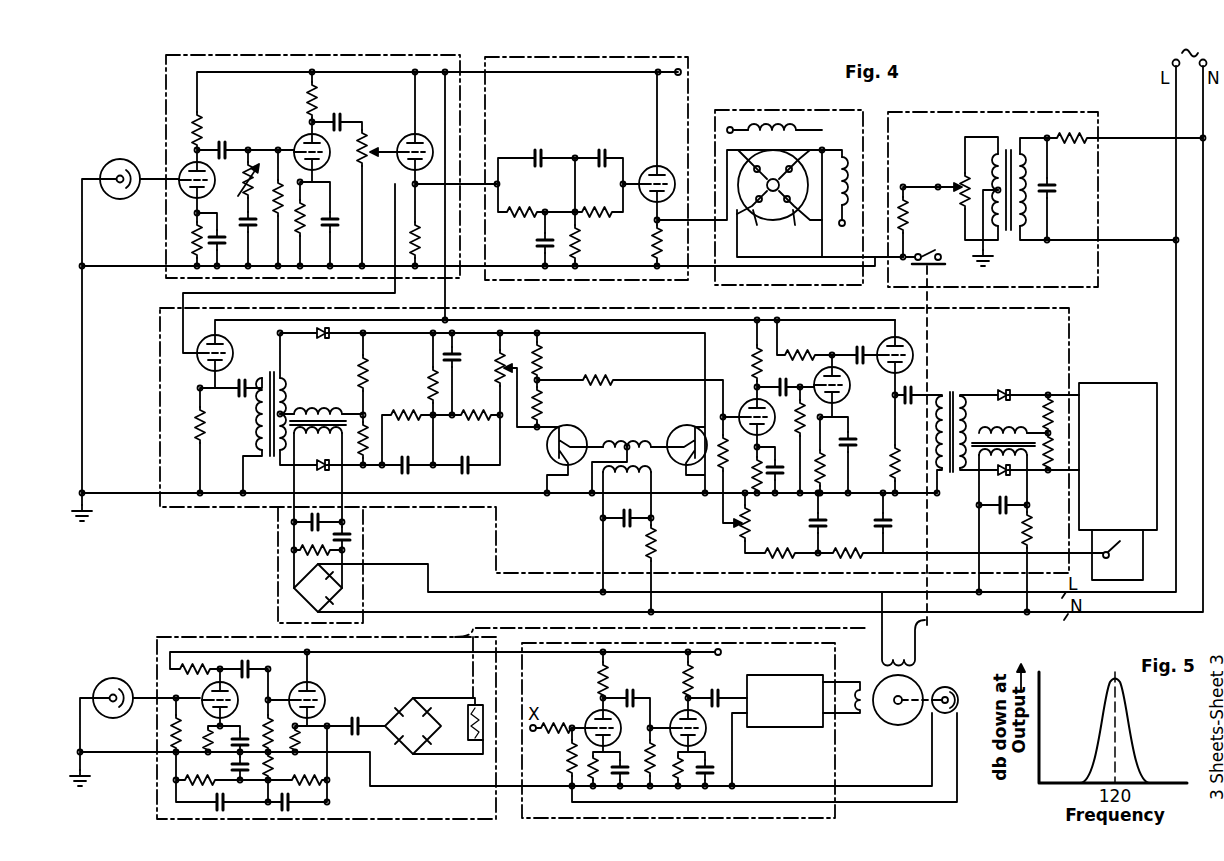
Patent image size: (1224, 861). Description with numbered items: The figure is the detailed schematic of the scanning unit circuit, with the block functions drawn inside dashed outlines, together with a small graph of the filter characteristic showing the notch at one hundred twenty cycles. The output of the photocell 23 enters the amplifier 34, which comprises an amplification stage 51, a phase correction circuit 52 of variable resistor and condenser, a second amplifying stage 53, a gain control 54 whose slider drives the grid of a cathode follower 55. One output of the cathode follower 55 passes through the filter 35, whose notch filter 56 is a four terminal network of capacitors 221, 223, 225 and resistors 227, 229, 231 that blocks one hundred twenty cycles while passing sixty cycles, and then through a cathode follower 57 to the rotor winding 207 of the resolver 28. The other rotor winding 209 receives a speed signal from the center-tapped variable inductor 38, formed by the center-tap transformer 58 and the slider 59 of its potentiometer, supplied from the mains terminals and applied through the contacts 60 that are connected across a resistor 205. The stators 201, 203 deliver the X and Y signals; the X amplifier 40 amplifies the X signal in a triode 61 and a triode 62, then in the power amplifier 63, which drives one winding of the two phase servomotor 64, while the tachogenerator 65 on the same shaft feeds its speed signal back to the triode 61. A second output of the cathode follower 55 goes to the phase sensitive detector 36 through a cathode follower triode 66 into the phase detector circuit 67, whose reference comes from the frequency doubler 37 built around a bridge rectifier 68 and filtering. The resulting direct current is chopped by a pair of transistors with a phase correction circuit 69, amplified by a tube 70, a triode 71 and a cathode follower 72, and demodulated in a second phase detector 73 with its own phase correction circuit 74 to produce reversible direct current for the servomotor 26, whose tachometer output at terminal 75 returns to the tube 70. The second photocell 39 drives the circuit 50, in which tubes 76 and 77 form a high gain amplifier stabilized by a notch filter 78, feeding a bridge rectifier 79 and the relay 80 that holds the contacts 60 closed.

The photocell 23 is at (117, 166).
The servomotor 26 is at (1114, 383).
The resolver 28 is at (789, 183).
The amplifier 34 is at (166, 67).
The filter 35 is at (688, 75).
The phase sensitive detector 36 is at (160, 333).
The frequency doubler 37 is at (278, 553).
The center-tapped variable inductor 38 is at (1047, 355).
The second photocell 39 is at (122, 679).
The X amplifier 40 is at (835, 664).
The direction speed controller circuit 50 is at (175, 637).
The amplification stage 51 is at (195, 163).
The phase correction circuit 52 is at (239, 178).
The second amplifying stage 53 is at (300, 138).
The gain control 54 is at (377, 160).
The cathode follower 55 is at (407, 137).
The notch filter 56 is at (558, 183).
The cathode follower 57 is at (649, 166).
The center-tap transformer 58 is at (1010, 234).
The slider 59 is at (957, 183).
The contacts 60 is at (941, 262).
The triode 61 is at (594, 717).
The triode 62 is at (680, 710).
The power amplifier 63 is at (796, 727).
The two phase servomotor 64 is at (882, 741).
The tachogenerator 65 is at (949, 687).
The triode 66 is at (229, 345).
The phase detector circuit 67 is at (330, 406).
The bridge rectifier / potentiometer 68 is at (482, 390).
The phase correction circuit 69 is at (633, 555).
The tube 70 is at (751, 401).
The triode 71 is at (847, 397).
The cathode follower 72 is at (907, 340).
The second phase detector 73 is at (1017, 425).
The phase correction circuit 74 is at (1008, 540).
The terminal 75 is at (1111, 552).
The tube 76 is at (198, 688).
The tube 77 is at (317, 687).
The notch filter 78 is at (302, 771).
The bridge rectifier 79 is at (406, 711).
The relay 80 is at (468, 702).
The stator 201 is at (838, 158).
The stator 203 is at (797, 134).
The resistor 205 is at (903, 197).
The rotor winding 207 is at (756, 228).
The rotor winding 209 is at (798, 228).
The capacitor 221 is at (540, 150).
The capacitor 223 is at (604, 150).
The capacitor 225 is at (537, 246).
The resistor 227 is at (513, 224).
The resistor 229 is at (600, 224).
The resistor 231 is at (584, 247).